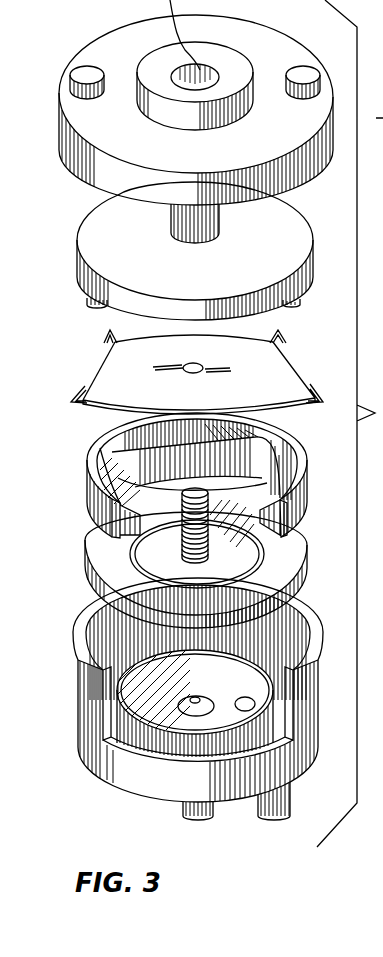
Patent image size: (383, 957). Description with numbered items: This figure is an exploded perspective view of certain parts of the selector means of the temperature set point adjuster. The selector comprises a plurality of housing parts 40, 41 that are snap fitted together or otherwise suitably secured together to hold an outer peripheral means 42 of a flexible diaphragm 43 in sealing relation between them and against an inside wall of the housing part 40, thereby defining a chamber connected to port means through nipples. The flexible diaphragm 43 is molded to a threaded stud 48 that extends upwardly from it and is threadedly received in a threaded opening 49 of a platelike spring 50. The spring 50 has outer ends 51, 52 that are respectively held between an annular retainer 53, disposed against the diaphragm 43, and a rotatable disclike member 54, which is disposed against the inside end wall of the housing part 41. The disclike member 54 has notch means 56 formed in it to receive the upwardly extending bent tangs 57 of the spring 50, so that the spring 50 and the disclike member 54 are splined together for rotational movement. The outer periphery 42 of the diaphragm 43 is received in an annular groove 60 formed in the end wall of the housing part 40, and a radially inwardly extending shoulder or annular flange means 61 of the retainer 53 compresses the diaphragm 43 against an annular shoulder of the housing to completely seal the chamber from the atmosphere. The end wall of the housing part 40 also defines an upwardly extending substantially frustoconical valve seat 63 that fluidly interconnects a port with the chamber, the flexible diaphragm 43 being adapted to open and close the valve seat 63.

The housing part 40 is at (78, 672).
The housing part 41 is at (90, 42).
The outer peripheral means 42 is at (90, 577).
The flexible diaphragm 43 is at (212, 554).
The threaded stud 48 is at (181, 542).
The threaded opening 49 is at (193, 363).
The platelike spring 50 is at (166, 397).
The outer end 51 is at (296, 362).
The outer end 52 is at (82, 372).
The annular retainer 53 is at (86, 462).
The rotatable disclike member 54 is at (82, 210).
The notch means 56 is at (88, 298).
The bent tangs 57 is at (54, 392).
The annular groove 60 is at (170, 757).
The annular flange means 61 is at (228, 458).
The frustoconical valve seat 63 is at (192, 697).